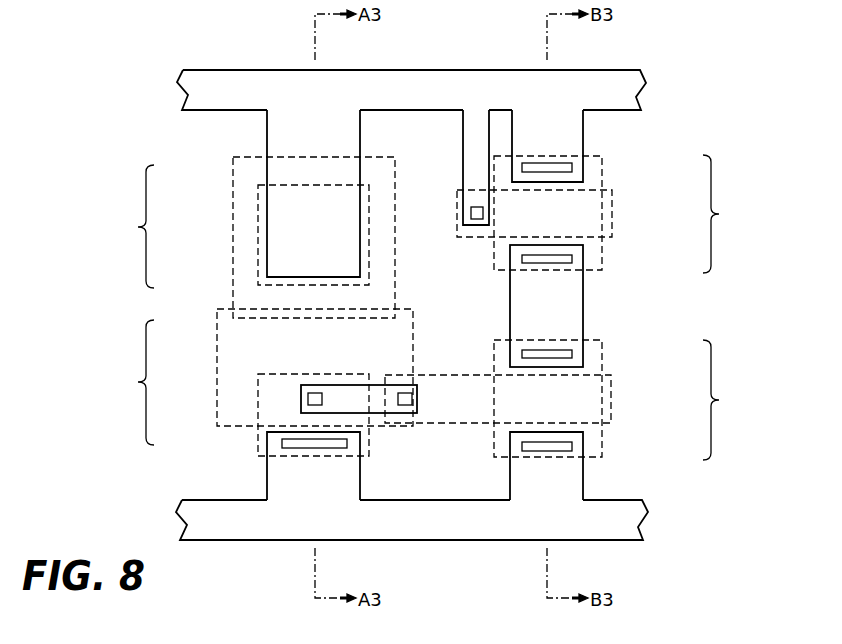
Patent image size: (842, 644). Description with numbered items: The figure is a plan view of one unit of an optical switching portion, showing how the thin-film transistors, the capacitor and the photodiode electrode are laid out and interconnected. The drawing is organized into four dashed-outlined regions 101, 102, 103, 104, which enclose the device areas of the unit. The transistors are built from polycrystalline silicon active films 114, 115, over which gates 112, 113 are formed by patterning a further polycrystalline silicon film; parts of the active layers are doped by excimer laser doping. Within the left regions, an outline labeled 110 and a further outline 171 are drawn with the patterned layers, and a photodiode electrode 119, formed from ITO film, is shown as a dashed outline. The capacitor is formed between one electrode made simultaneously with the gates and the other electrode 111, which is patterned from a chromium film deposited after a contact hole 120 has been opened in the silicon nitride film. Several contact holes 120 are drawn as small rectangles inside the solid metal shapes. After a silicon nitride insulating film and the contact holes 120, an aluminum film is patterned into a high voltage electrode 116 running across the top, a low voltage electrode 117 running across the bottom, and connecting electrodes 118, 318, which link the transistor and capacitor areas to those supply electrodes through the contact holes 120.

The first transistor 101 is at (125, 226).
The second transistor 102 is at (125, 382).
The third transistor 103 is at (733, 214).
The fourth transistor 104 is at (733, 400).
The gate electrode 110 is at (265, 236).
The other electrode of the capacitor 111 is at (240, 345).
The gate 112 is at (608, 222).
The gate 113 is at (612, 398).
The active film 114 is at (592, 180).
The active film 115 is at (592, 440).
The high voltage electrode 116 is at (625, 88).
The low voltage electrode 117 is at (617, 542).
The connecting electrode 118 is at (575, 306).
The one electrode of the photodiode 119 is at (245, 188).
The contact hole 120 is at (583, 170).
The active region 171 is at (268, 407).
The connecting electrode 318 is at (378, 395).